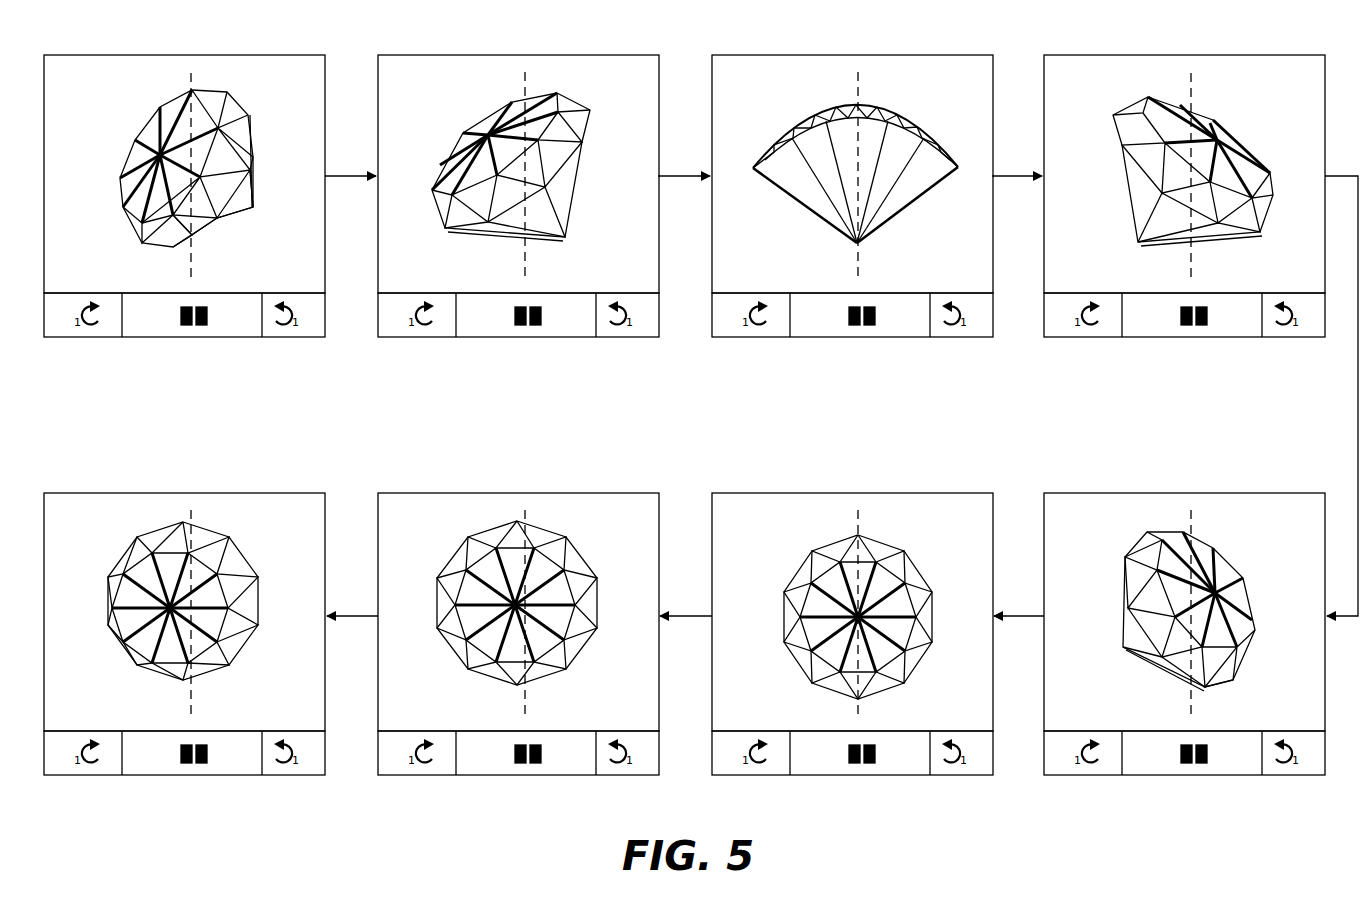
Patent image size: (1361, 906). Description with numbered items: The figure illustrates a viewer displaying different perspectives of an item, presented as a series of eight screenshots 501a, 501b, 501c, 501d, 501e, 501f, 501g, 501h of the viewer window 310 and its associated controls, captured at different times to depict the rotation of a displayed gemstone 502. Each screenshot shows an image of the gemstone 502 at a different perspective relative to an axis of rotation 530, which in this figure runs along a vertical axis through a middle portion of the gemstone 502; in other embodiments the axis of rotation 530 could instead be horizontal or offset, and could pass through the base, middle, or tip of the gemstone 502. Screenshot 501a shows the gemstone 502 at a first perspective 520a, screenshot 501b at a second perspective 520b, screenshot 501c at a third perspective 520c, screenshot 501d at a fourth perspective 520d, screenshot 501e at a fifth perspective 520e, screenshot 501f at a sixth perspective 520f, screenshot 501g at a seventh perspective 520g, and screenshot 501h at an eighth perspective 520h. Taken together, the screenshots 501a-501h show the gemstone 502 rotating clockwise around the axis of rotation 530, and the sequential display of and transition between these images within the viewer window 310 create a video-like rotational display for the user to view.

The viewer window 310 is at (90, 89).
The screenshot 501a is at (184, 210).
The screenshot 501b is at (518, 210).
The screenshot 501c is at (852, 210).
The screenshot 501d is at (1184, 210).
The screenshot 501e is at (1184, 648).
The screenshot 501f is at (852, 648).
The screenshot 501g is at (518, 648).
The screenshot 501h is at (184, 648).
The gemstone 502 is at (664, 394).
The first perspective 520a is at (252, 82).
The second perspective 520b is at (570, 84).
The third perspective 520c is at (890, 91).
The fourth perspective 520d is at (1220, 103).
The fifth perspective 520e is at (1237, 537).
The sixth perspective 520f is at (900, 536).
The seventh perspective 520g is at (580, 529).
The eighth perspective 520h is at (243, 524).
The axis of rotation 530 is at (725, 395).